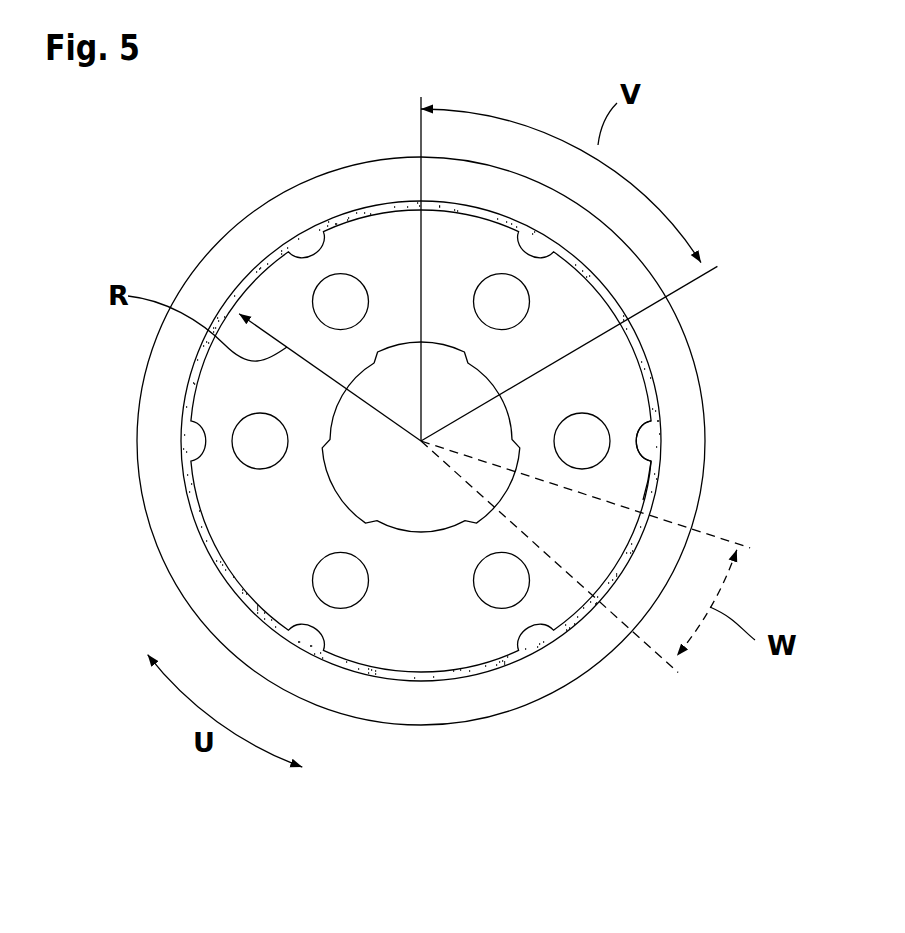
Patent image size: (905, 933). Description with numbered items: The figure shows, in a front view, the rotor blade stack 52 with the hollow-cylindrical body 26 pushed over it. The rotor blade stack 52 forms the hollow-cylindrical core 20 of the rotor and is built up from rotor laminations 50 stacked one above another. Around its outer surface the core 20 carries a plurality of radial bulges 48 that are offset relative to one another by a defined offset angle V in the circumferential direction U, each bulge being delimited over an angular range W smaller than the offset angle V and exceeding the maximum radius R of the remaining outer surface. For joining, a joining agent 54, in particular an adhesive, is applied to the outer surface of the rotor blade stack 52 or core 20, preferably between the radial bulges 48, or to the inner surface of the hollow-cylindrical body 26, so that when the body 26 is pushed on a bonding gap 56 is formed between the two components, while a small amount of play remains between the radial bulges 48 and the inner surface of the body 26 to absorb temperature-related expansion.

The hollow-cylindrical core 20 is at (187, 488).
The hollow-cylindrical body 26 is at (272, 220).
The radial bulge 48 is at (408, 207).
The rotor lamination 50 is at (237, 380).
The rotor blade stack 52 is at (472, 448).
The joining agent 54 is at (662, 427).
The bonding gap 56 is at (660, 477).